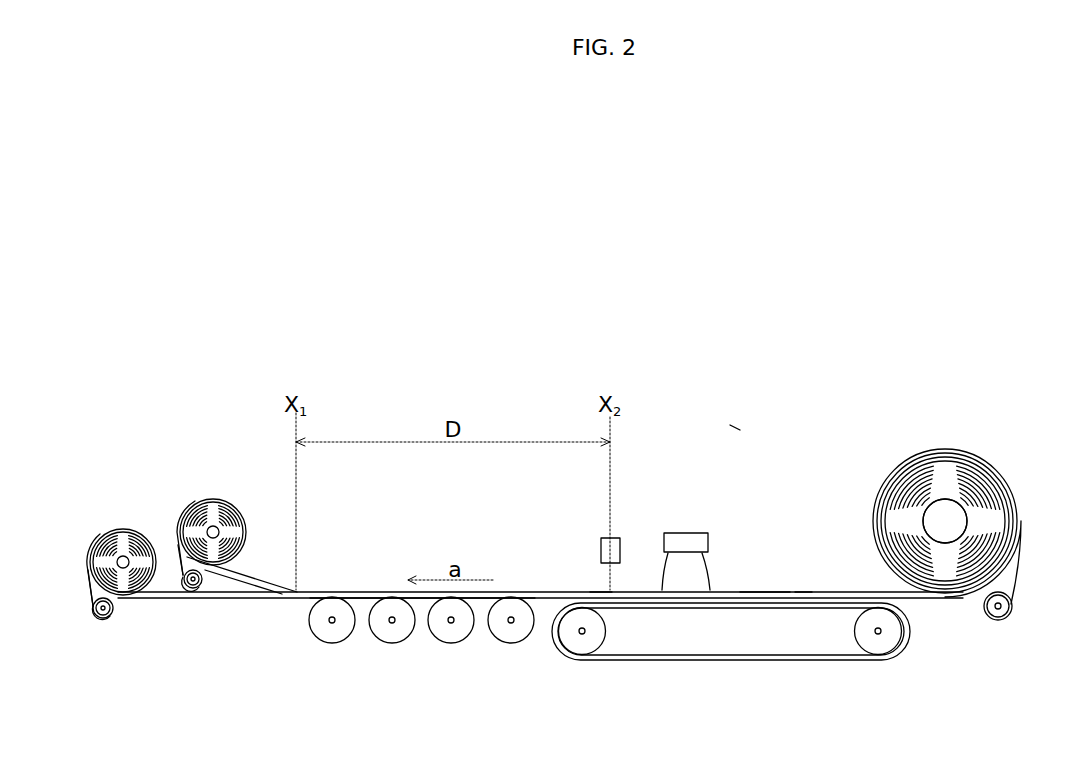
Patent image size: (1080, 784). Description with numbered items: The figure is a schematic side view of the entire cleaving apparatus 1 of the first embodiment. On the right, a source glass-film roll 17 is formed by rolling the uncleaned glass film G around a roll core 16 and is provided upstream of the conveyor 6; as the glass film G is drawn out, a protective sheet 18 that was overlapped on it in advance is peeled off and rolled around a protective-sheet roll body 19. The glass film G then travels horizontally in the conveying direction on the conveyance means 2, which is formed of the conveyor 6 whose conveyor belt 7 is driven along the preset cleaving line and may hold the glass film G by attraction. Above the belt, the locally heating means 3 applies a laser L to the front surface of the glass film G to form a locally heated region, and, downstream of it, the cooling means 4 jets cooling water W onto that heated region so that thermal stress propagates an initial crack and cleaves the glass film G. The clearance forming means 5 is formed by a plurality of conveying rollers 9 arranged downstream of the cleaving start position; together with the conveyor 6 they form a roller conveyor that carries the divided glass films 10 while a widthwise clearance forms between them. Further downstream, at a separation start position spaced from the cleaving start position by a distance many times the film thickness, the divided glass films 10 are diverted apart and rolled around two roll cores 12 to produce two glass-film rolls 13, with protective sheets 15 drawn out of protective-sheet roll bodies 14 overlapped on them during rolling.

The cleaving apparatus 1 is at (728, 432).
The conveyance means 2 is at (655, 682).
The locally heating means 3 is at (685, 533).
The cooling means 4 is at (622, 545).
The clearance forming means 5 is at (427, 668).
The conveyor 6 is at (745, 650).
The conveyor belt 7 is at (763, 598).
The conveying rollers 9 is at (333, 644).
The divided glass films 10 is at (538, 592).
The roll cores 12 is at (122, 556).
The glass-film rolls 13 is at (95, 538).
The protective-sheet roll bodies 14 is at (104, 620).
The protective sheets 15 is at (87, 592).
The roll core 16 is at (953, 521).
The source glass-film roll 17 is at (957, 447).
The protective sheet 18 is at (1022, 567).
The protective-sheet roll body 19 is at (1004, 622).
The cooling water W is at (600, 578).
The laser L is at (713, 583).
The glass film G is at (803, 590).